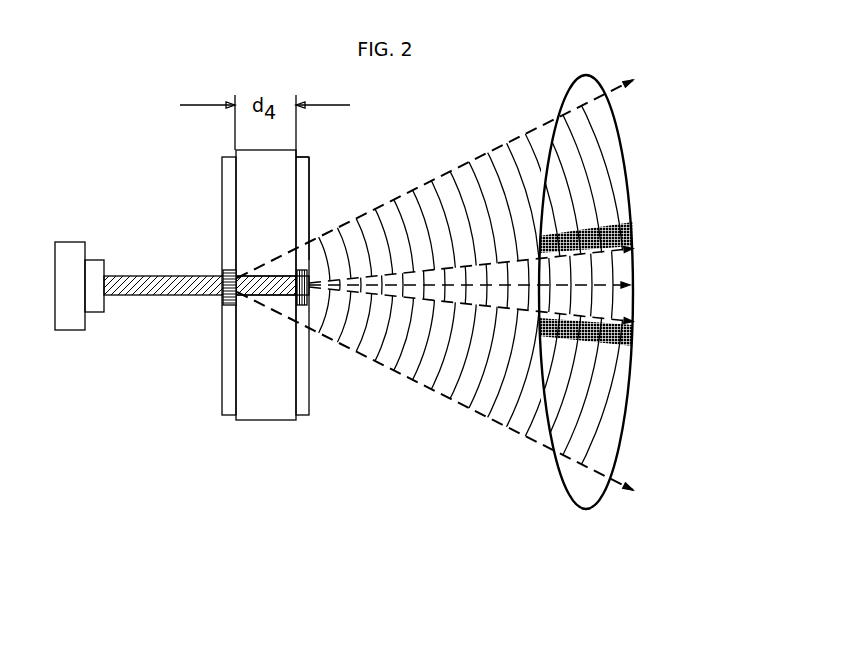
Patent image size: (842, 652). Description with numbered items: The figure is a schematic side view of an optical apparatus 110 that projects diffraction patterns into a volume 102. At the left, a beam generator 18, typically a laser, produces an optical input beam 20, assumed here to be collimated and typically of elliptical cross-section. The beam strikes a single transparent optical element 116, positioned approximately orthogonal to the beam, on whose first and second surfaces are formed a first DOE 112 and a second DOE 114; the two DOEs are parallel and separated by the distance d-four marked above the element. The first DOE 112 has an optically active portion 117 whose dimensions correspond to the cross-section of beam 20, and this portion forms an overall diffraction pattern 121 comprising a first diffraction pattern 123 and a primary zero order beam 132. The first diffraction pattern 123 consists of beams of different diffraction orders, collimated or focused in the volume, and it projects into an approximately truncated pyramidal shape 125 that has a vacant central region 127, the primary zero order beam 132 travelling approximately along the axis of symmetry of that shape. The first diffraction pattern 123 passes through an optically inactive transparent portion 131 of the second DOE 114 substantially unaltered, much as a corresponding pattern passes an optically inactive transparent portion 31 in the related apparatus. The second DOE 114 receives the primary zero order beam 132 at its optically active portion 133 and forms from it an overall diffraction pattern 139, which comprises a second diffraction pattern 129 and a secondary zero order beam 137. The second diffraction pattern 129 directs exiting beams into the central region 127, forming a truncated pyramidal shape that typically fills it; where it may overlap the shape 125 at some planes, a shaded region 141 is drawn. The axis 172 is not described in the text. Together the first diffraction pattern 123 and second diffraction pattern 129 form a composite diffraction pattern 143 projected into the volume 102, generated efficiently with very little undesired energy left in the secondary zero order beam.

The beam generator 18 is at (75, 330).
The optical input beam 20 is at (165, 295).
The optically active portion 117 is at (232, 305).
The primary zero order beam 132 is at (268, 295).
The optically active portion 133 is at (300, 270).
The optically inactive transparent portion 131 is at (308, 352).
The first DOE 112 is at (229, 416).
The second DOE 114 is at (303, 416).
The transparent optical element 116 is at (281, 150).
The optical apparatus 110 is at (235, 323).
The optically inactive transparent portion 31 is at (309, 210).
The overall diffraction pattern 121 is at (399, 196).
The composite diffraction pattern 143 is at (653, 478).
The central beam axis 172 is at (633, 285).
The secondary zero order beam 137 is at (633, 250).
The vacant central region 127 is at (617, 310).
The overall diffraction pattern 139 is at (528, 257).
The first diffraction pattern 123 is at (487, 183).
The second diffraction pattern 129 is at (433, 292).
The shaded region 141 is at (633, 237).
The volume 102 is at (590, 508).
The truncated pyramidal shape 125 is at (607, 147).